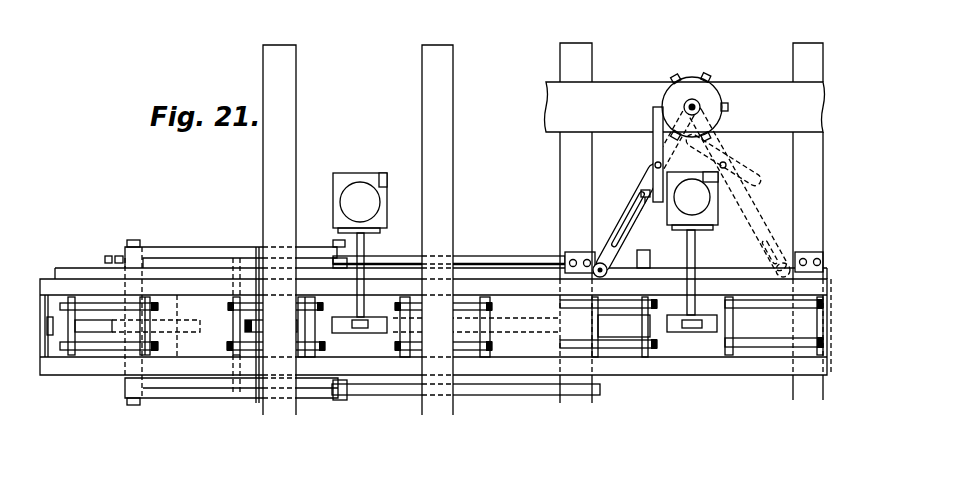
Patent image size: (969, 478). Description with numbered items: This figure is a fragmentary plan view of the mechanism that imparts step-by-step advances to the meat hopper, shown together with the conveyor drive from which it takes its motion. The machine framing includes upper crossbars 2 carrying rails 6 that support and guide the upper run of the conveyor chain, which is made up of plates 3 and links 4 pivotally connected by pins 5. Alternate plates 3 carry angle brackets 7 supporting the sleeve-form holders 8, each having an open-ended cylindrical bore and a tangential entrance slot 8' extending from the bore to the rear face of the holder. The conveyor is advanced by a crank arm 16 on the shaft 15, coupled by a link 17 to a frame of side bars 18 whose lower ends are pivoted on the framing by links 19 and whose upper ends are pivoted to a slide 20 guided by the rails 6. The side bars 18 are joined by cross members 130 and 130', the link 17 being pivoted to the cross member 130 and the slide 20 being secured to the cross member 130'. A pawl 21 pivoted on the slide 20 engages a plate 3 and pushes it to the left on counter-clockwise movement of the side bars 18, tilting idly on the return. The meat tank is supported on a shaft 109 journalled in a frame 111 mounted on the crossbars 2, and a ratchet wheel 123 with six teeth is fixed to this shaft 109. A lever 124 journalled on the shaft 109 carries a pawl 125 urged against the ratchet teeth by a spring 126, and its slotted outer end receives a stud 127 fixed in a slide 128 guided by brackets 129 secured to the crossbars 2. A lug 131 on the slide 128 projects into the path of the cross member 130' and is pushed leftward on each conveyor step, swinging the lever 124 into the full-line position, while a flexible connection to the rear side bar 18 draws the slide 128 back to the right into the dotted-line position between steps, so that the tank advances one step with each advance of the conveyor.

The upper crossbars 2 is at (263, 73).
The plates 3 is at (57, 358).
The links 4 is at (222, 305).
The pins 5 is at (723, 165).
The rails 6 is at (392, 278).
The angle brackets 7 is at (365, 245).
The holders 8 is at (519, 204).
The tangential entrance slots 8' is at (548, 175).
The shaft 15 is at (647, 247).
The crank arm 16 is at (608, 316).
The link 17 is at (478, 323).
The side bars 18 is at (186, 250).
The links 19 is at (478, 258).
The slide 20 is at (102, 338).
The pawl 21 is at (92, 325).
The shaft 109 is at (700, 103).
The frame 111 is at (633, 85).
The ratchet wheel 123 is at (693, 80).
The lever 124 is at (645, 188).
The pawl 125 is at (656, 140).
The spring 126 is at (653, 208).
The pin or stud 127 is at (691, 279).
The slide 128 is at (70, 268).
The brackets 129 is at (567, 257).
The cross member 130 is at (192, 342).
The cross member 130' is at (122, 409).
The pawl or lug 131 is at (113, 256).